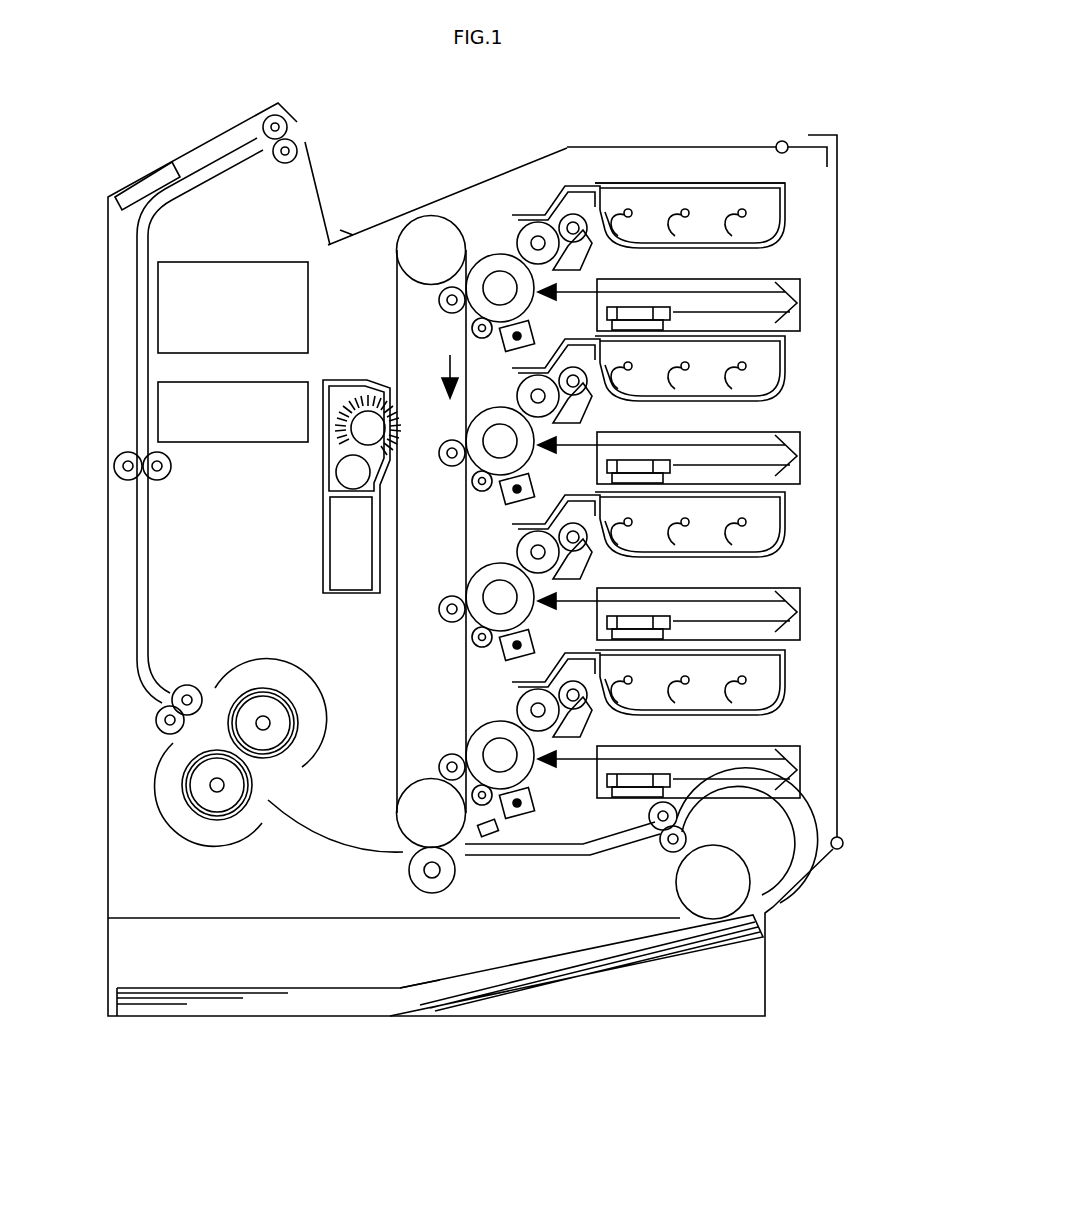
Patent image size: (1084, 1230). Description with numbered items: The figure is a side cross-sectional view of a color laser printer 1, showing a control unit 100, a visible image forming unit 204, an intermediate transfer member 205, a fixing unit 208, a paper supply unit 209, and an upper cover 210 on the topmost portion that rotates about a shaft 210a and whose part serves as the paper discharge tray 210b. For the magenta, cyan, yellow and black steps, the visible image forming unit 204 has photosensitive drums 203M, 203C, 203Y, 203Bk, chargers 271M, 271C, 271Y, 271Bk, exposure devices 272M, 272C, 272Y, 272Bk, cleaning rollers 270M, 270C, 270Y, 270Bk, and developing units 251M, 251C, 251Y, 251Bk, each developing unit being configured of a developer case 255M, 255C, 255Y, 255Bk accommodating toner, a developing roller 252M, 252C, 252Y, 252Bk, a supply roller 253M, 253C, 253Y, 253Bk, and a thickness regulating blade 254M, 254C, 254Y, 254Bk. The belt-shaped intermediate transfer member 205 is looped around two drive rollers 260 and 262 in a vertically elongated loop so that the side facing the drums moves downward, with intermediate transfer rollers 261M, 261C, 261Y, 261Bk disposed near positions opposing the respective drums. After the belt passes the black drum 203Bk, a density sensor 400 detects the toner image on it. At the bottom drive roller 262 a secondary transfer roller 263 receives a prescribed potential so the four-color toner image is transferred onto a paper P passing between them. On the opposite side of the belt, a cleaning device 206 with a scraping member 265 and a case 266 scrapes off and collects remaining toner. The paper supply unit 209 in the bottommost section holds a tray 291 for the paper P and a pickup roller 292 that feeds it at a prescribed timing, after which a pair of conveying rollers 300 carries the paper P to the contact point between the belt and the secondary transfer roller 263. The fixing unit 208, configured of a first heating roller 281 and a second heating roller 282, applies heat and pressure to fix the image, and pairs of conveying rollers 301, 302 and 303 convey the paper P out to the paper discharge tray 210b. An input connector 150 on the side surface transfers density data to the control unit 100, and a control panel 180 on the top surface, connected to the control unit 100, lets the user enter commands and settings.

The color laser printer 1 is at (692, 110).
The control unit 100 is at (262, 262).
The input connector 150 is at (212, 443).
The control panel 180 is at (160, 185).
The photosensitive drum 203M is at (492, 256).
The photosensitive drum 203C is at (485, 420).
The photosensitive drum 203Y is at (485, 578).
The photosensitive drum 203Bk is at (470, 740).
The visible image forming unit 204 is at (729, 172).
The intermediate transfer member 205 is at (397, 318).
The cleaning device 206 is at (342, 380).
The fixing unit 208 is at (246, 668).
The paper supply unit 209 is at (127, 960).
The upper cover 210 is at (566, 147).
The shaft 210a is at (784, 140).
The paper discharge tray 210b is at (455, 190).
The developing unit 251M is at (612, 260).
The developing unit 251C is at (612, 413).
The developing unit 251Y is at (612, 569).
The developing unit 251Bk is at (612, 727).
The developing roller 252M is at (537, 222).
The developing roller 252C is at (528, 396).
The developing roller 252Y is at (528, 553).
The developing roller 252Bk is at (520, 710).
The supply roller 253M is at (572, 213).
The supply roller 253C is at (585, 375).
The supply roller 253Y is at (585, 530).
The supply roller 253Bk is at (585, 688).
The thickness regulating blade 254M is at (567, 306).
The thickness regulating blade 254C is at (567, 457).
The thickness regulating blade 254Y is at (567, 614).
The thickness regulating blade 254Bk is at (568, 772).
The developer case 255M is at (760, 248).
The developer case 255C is at (760, 401).
The developer case 255Y is at (760, 557).
The developer case 255Bk is at (760, 715).
The drive roller 260 is at (420, 232).
The intermediate transfer roller 261M is at (440, 297).
The intermediate transfer roller 261C is at (445, 453).
The intermediate transfer roller 261Y is at (445, 610).
The intermediate transfer roller 261Bk is at (440, 767).
The drive roller 262 is at (400, 822).
The secondary transfer roller 263 is at (410, 873).
The scraping member 265 is at (340, 455).
The case 266 is at (340, 540).
The cleaning roller 270M is at (472, 327).
The cleaning roller 270C is at (475, 483).
The cleaning roller 270Y is at (475, 640).
The cleaning roller 270Bk is at (490, 803).
The charger 271M is at (505, 346).
The charger 271C is at (505, 496).
The charger 271Y is at (505, 652).
The charger 271Bk is at (540, 810).
The exposure device 272M is at (800, 315).
The exposure device 272C is at (800, 468).
The exposure device 272Y is at (800, 625).
The exposure device 272Bk is at (800, 785).
The first heating roller 281 is at (272, 700).
The second heating roller 282 is at (228, 822).
The tray 291 is at (665, 968).
The pickup roller 292 is at (737, 896).
The pair of conveying rollers 300 is at (665, 852).
The pair of conveying rollers 301 is at (160, 729).
The pair of conveying rollers 302 is at (116, 464).
The pair of conveying rollers 303 is at (271, 115).
The density sensor 400 is at (490, 838).
The paper P is at (222, 988).